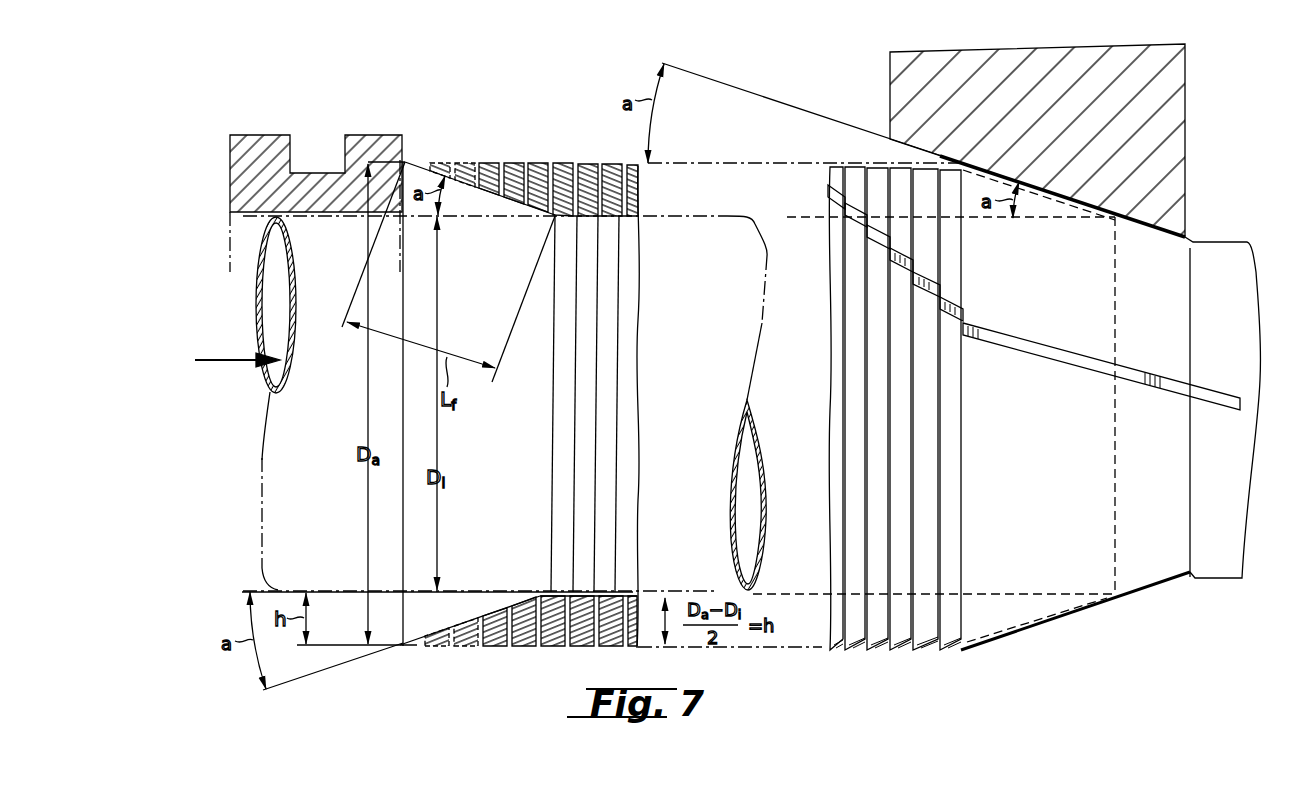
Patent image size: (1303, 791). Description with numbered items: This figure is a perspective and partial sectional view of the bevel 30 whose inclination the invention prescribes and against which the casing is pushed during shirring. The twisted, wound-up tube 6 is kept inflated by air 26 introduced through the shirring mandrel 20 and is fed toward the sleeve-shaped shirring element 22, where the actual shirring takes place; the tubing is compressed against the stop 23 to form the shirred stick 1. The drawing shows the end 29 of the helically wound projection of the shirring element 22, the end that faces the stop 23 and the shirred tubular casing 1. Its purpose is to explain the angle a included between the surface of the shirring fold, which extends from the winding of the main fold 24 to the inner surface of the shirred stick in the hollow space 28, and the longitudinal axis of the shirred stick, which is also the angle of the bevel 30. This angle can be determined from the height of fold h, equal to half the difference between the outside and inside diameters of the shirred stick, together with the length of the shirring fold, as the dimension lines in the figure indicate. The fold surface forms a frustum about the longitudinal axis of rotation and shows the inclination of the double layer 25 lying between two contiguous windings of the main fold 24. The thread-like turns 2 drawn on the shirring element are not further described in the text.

The shirred stick 1 is at (569, 129).
The thread turns of the coupling 2 is at (853, 214).
The tube 6 is at (1260, 266).
The shirring mandrel 20 is at (257, 298).
The sleeve-shaped shirring element 22 is at (1192, 73).
The stop 23 is at (383, 138).
The main fold 24 is at (477, 153).
The double layer 25 is at (481, 200).
The air 26 is at (217, 363).
The hollow space 28 is at (597, 218).
The end of the helically wound projection 29 is at (1142, 207).
The bevel 30 is at (903, 146).